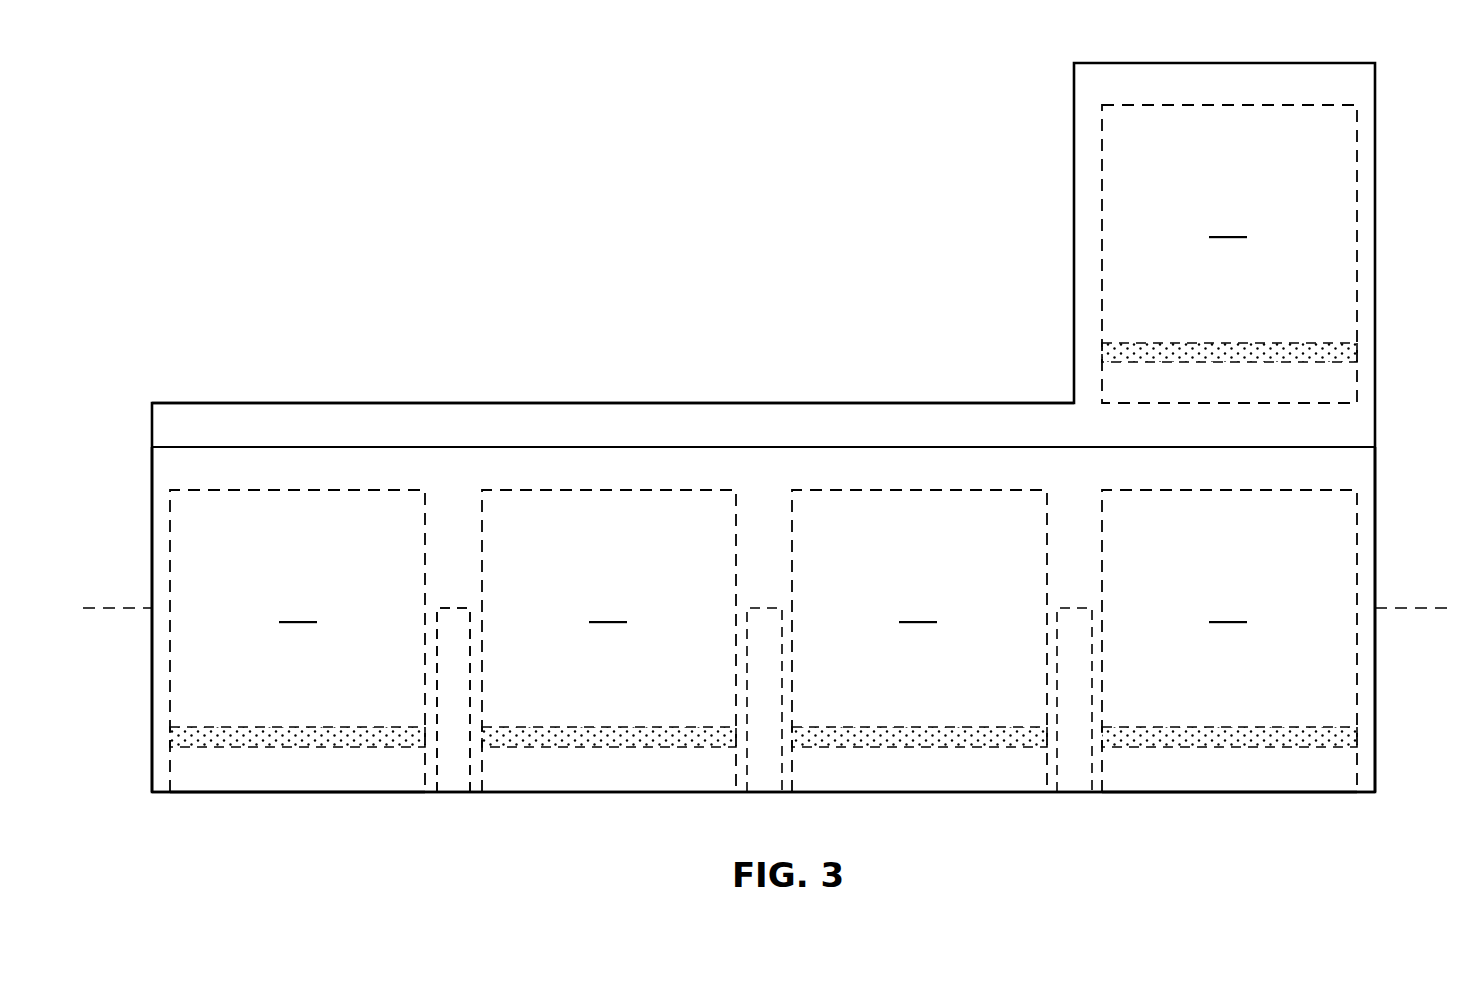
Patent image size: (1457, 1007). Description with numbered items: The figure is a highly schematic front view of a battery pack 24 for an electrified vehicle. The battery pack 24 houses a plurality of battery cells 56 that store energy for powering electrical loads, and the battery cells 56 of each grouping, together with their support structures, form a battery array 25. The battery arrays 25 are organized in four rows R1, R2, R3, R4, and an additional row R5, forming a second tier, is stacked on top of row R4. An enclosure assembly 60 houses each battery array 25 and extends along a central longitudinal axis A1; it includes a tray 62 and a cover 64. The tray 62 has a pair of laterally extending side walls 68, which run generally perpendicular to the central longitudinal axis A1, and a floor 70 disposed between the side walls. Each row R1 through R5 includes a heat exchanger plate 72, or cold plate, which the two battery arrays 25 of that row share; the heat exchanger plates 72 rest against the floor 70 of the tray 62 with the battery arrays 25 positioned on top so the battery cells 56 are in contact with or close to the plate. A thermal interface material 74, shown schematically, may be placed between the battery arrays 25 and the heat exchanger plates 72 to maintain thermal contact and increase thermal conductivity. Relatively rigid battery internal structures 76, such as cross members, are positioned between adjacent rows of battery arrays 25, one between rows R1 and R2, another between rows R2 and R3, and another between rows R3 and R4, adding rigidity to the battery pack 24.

The battery pack 24 is at (748, 326).
The battery array 25 is at (798, 403).
The row R1 is at (363, 484).
The row R2 is at (614, 484).
The row R3 is at (815, 485).
The row R4 is at (1171, 487).
The row R5 is at (1144, 101).
The battery cell 56 is at (763, 415).
The enclosure assembly 60 is at (149, 428).
The tray 62 is at (149, 757).
The cover 64 is at (184, 399).
The laterally extending side wall 68 is at (150, 668).
The floor 70 is at (420, 793).
The heat exchanger plate 72 is at (228, 778).
The thermal interface material 74 is at (260, 733).
The battery internal structure 76 is at (463, 615).
The central longitudinal axis A1 is at (120, 605).